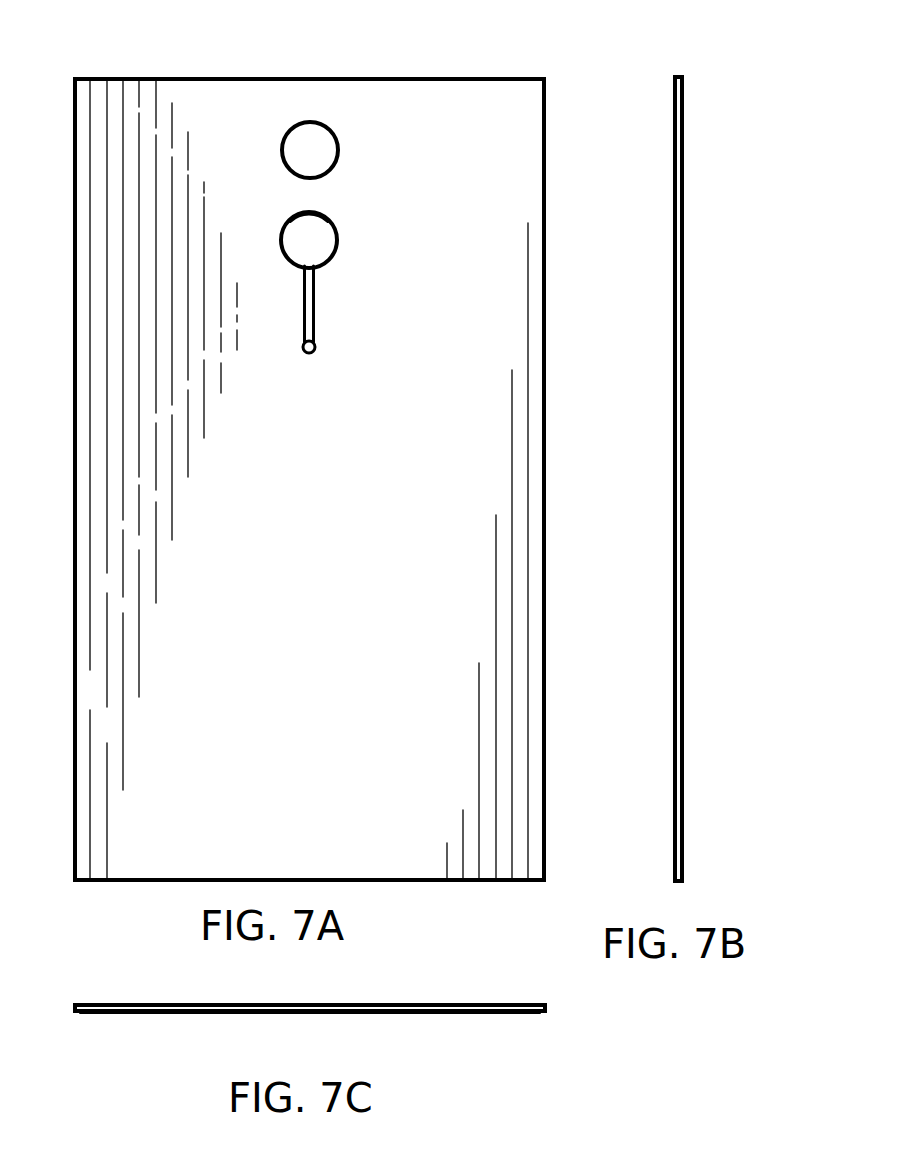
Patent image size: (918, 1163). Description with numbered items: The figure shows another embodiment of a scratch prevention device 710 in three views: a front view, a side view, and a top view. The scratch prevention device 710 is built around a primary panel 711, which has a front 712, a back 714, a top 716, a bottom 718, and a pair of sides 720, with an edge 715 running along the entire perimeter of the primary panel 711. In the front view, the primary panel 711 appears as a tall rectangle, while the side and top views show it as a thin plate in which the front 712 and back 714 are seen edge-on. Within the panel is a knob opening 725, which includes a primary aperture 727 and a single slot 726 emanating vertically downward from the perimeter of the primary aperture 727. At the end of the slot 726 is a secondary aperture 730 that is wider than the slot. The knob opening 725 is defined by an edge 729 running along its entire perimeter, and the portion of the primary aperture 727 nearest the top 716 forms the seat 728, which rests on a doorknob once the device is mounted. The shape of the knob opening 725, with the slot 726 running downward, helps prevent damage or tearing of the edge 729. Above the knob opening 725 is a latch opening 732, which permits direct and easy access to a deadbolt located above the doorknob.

In FIG. 7A, the scratch prevention device 710 is at (212, 50).
In FIG. 7B, the scratch prevention device 710 is at (715, 219).
In FIG. 7A, the primary panel 711 is at (513, 720).
In FIG. 7A, the front 712 is at (513, 350).
In FIG. 7C, the front 712 is at (395, 1013).
In FIG. 7B, the back 714 is at (684, 420).
In FIG. 7C, the back 714 is at (302, 1003).
In FIG. 7A, the edge 715 is at (116, 77).
In FIG. 7A, the top 716 is at (376, 78).
In FIG. 7A, the bottom 718 is at (436, 884).
In FIG. 7A, the pair of sides 720 is at (513, 568).
In FIG. 7C, the pair of sides 720 is at (73, 1007).
In FIG. 7A, the knob opening 725 is at (315, 204).
In FIG. 7A, the slot 726 is at (316, 288).
In FIG. 7A, the primary aperture 727 is at (340, 240).
In FIG. 7A, the seat 728 is at (318, 212).
In FIG. 7A, the edge 729 is at (303, 298).
In FIG. 7A, the secondary aperture 730 is at (318, 350).
In FIG. 7A, the latch opening 732 is at (337, 138).